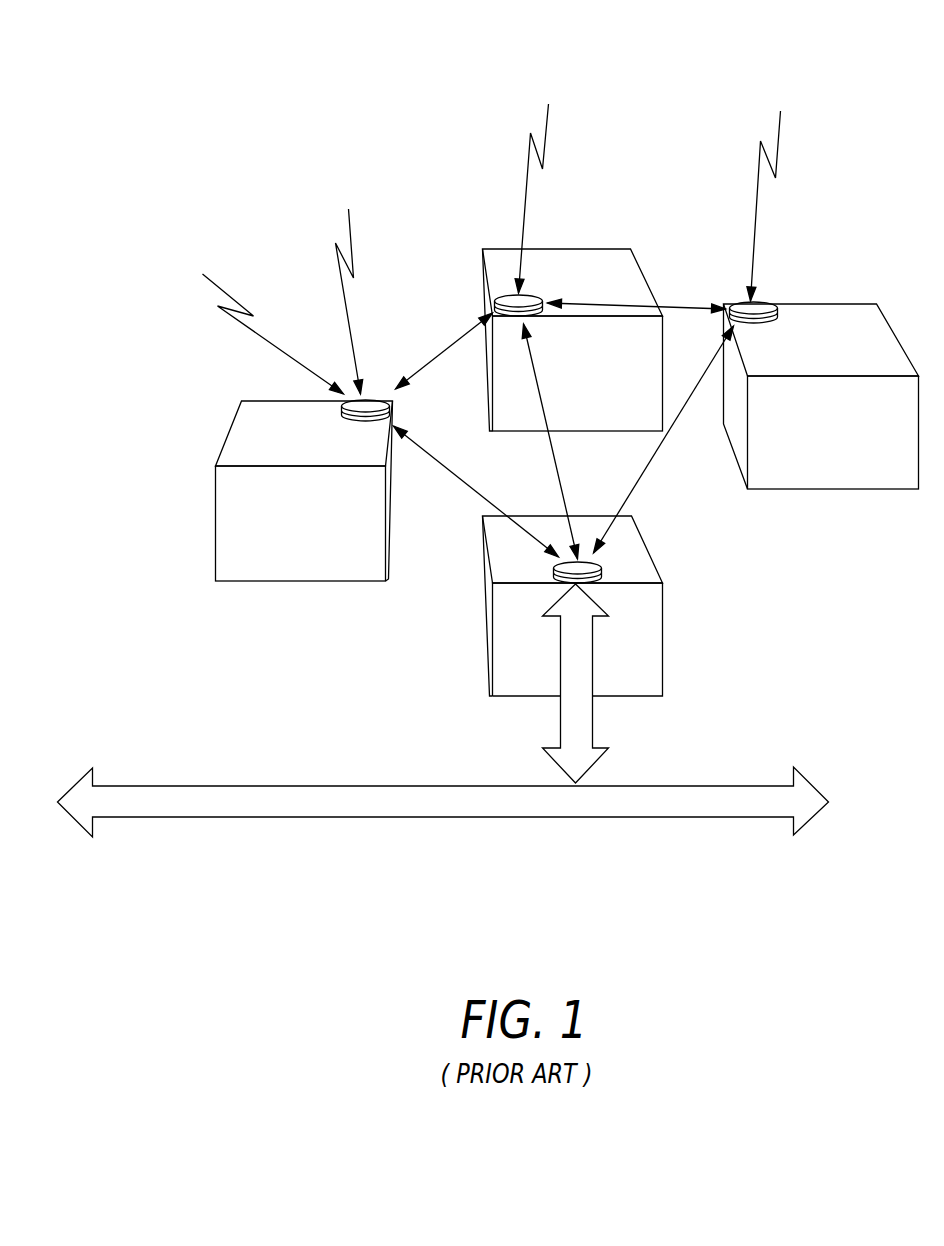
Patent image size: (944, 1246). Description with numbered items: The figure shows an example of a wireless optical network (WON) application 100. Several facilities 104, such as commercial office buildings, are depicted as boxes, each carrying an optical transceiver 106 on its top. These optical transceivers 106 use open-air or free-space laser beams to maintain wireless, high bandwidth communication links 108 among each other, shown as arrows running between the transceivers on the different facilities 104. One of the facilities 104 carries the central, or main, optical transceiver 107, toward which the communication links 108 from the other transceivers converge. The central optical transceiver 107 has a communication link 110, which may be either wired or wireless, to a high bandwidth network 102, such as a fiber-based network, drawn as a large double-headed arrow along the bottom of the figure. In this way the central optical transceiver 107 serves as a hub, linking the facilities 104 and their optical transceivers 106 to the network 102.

The wireless optical network application 100 is at (322, 98).
The high bandwidth network 102 is at (290, 775).
The facilities 104 is at (320, 531).
The optical transceivers 106 is at (362, 392).
The central optical transceiver 107 is at (594, 560).
The communication links 108 is at (252, 331).
The communication link 110 is at (574, 650).